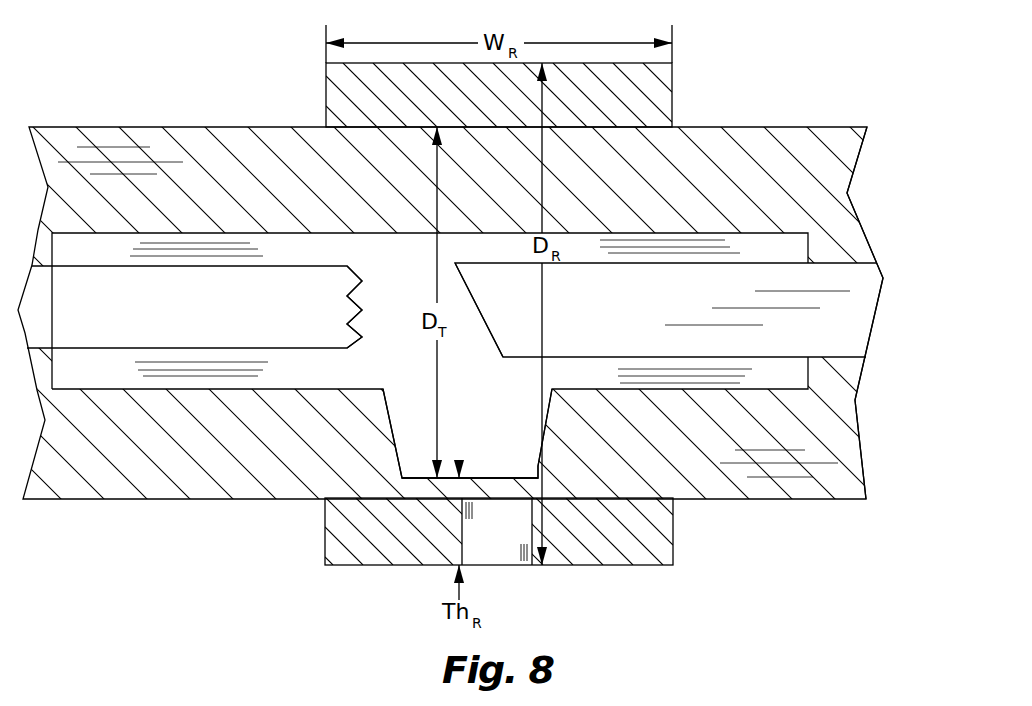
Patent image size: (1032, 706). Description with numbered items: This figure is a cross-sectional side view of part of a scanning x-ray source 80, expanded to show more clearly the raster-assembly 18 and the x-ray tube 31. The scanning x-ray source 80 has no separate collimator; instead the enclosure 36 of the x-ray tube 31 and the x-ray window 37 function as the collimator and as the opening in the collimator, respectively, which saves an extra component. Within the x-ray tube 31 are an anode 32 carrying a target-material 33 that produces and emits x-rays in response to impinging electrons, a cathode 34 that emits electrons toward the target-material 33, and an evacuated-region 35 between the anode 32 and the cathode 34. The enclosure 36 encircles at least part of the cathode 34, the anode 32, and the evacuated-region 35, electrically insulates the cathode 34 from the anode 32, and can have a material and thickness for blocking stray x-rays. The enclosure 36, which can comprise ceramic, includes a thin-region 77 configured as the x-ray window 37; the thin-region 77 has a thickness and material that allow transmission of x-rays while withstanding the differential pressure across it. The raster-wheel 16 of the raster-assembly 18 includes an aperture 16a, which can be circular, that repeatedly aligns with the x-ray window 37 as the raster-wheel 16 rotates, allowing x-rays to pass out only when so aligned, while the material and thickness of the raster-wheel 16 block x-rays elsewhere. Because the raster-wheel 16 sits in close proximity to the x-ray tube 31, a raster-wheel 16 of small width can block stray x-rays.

The scanning x-ray source 80 is at (122, 61).
The raster-assembly 18 is at (772, 88).
The raster-wheel 16 is at (505, 106).
The aperture 16a is at (522, 541).
The enclosure 36 is at (812, 176).
The evacuated-region 35 is at (395, 328).
The cathode 34 is at (345, 336).
The anode 32 is at (623, 326).
The target-material 33 is at (477, 312).
The x-ray tube 31 is at (877, 405).
The x-ray window 37 is at (497, 490).
The thin-region 77 is at (488, 490).